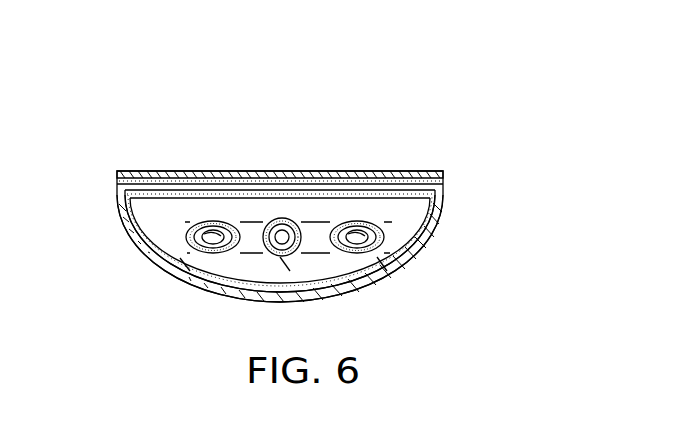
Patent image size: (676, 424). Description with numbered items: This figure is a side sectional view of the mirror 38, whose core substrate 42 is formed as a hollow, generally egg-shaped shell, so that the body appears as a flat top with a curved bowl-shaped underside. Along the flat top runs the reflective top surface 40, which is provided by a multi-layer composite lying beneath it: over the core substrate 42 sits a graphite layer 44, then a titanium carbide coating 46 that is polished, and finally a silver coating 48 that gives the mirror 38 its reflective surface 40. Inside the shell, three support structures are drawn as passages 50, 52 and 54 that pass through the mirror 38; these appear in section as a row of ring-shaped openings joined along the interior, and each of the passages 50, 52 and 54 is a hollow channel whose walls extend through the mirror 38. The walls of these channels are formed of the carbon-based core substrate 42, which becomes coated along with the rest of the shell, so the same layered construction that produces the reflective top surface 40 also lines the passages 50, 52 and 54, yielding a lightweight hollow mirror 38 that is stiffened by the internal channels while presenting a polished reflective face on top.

The mirror 38 is at (172, 60).
The reflective top surface 40 is at (276, 171).
The core substrate 42 is at (186, 234).
The graphite layer 44 is at (447, 203).
The titanium carbide coating 46 is at (208, 212).
The silver coating 48 is at (408, 172).
The passage 50 is at (197, 256).
The passage 52 is at (286, 256).
The passage 54 is at (374, 254).